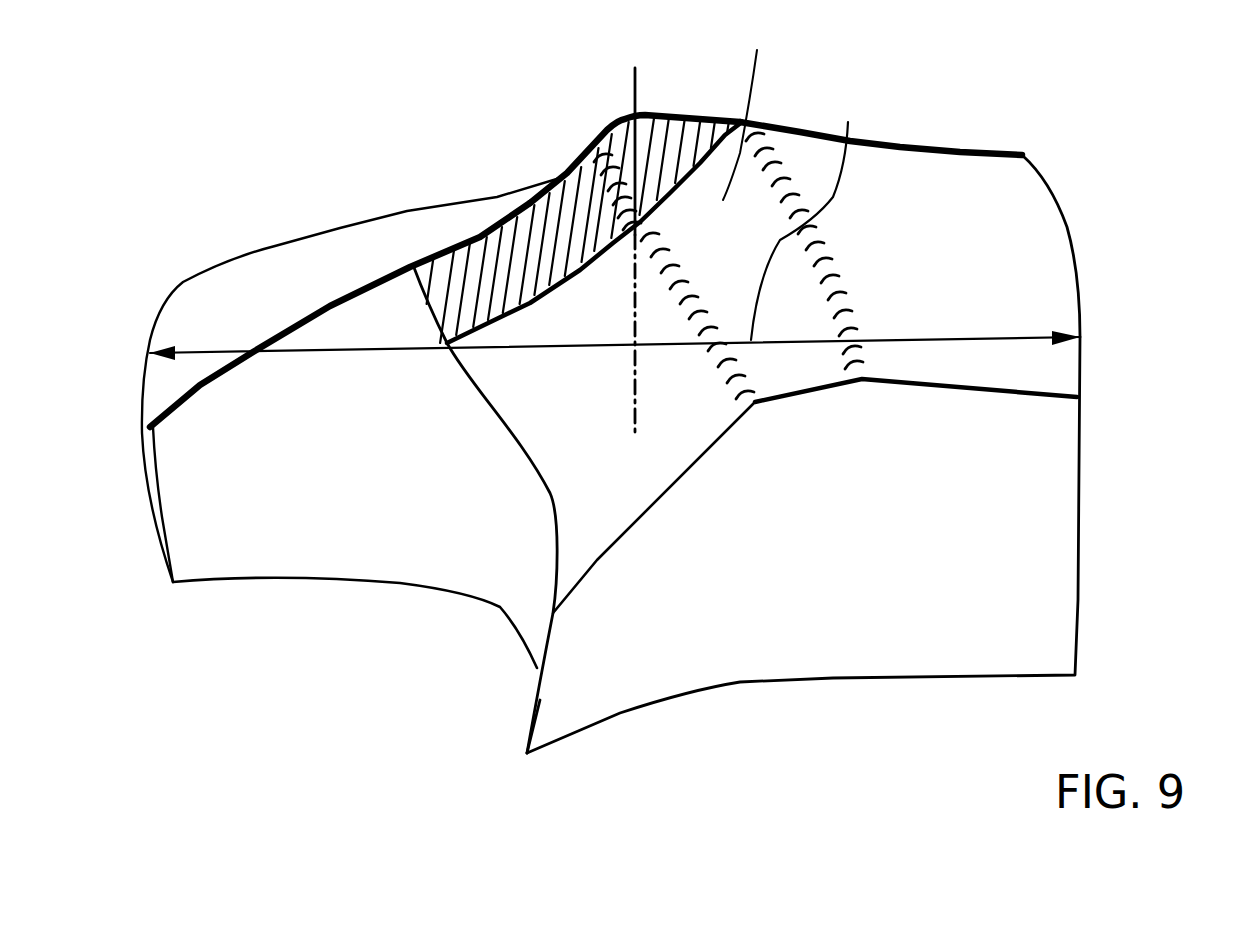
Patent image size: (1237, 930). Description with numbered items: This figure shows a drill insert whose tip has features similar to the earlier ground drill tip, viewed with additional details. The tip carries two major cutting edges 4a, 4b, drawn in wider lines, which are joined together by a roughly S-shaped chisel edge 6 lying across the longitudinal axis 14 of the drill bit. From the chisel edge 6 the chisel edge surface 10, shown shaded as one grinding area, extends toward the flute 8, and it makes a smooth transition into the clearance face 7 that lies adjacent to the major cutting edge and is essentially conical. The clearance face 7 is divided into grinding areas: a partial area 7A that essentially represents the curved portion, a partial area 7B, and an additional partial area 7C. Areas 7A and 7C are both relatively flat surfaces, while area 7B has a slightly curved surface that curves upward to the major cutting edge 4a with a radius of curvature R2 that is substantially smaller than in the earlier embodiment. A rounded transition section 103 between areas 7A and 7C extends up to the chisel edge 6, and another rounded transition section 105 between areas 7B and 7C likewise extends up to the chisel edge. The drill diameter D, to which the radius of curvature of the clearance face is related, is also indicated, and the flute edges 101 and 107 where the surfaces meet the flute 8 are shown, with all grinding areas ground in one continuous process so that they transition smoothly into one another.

The major cutting edge 4b is at (283, 327).
The chisel edge surface 10 is at (530, 227).
The longitudinal axis 14 is at (633, 97).
The chisel edge 6 is at (670, 118).
The partial area 7C is at (750, 106).
The rounded transition section 105 is at (792, 148).
The drill diameter D is at (804, 211).
The major cutting edge 4a is at (890, 143).
The partial area 7B is at (1007, 207).
The clearance face 7 is at (1032, 277).
The partial area 7A is at (487, 380).
The flute edge 101 is at (148, 549).
The rounded transition section 103 is at (710, 367).
The radius of curvature R2 is at (761, 424).
The flute 8 is at (277, 573).
The flute edge 107 is at (514, 727).